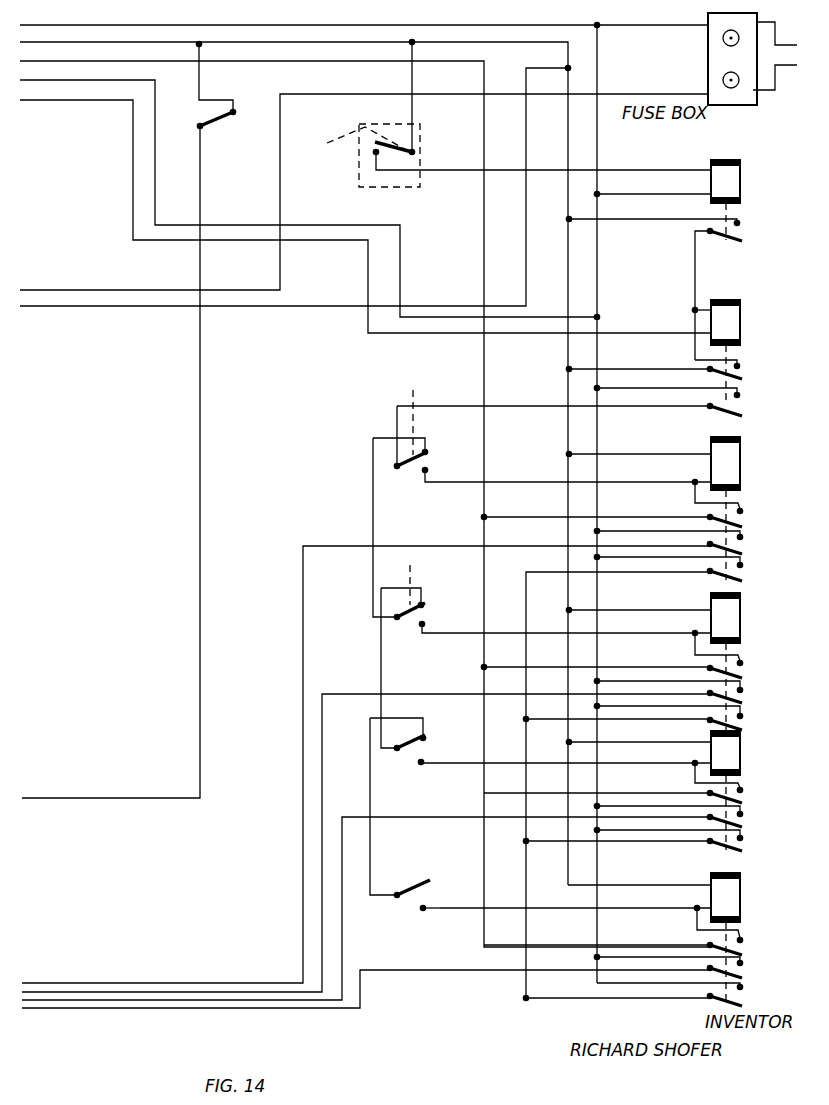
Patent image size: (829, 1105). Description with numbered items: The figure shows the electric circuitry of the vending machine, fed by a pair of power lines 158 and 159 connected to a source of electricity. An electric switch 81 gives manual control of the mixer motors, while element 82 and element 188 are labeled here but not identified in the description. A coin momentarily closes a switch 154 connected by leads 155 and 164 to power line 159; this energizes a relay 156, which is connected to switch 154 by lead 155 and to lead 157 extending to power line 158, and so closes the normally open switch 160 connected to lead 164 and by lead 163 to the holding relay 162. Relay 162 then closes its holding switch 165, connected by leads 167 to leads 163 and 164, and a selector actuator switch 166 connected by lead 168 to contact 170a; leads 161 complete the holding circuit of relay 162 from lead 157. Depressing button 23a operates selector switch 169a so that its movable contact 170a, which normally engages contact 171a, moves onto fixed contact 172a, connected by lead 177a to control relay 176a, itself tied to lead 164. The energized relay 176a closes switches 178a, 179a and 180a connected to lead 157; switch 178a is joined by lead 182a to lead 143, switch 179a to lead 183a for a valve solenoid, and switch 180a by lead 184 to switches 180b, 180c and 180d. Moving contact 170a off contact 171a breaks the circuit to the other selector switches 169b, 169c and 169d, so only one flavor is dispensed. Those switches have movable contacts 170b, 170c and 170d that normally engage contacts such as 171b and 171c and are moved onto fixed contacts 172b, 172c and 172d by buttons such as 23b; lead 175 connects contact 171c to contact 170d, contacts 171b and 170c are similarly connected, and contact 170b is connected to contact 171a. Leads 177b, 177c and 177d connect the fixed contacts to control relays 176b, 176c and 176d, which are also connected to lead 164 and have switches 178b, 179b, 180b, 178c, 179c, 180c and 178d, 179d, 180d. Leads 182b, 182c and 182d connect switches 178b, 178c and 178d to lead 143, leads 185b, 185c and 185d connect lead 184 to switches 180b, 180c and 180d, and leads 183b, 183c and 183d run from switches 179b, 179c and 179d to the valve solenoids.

The electric switch 81 is at (242, 108).
The conductor 82 is at (208, 172).
The lead 155 is at (411, 75).
The switch 154 is at (370, 150).
The lead 143 is at (482, 266).
The lead 164 is at (568, 278).
The lead 157 is at (598, 283).
The leads 161 is at (506, 334).
The power line 158 is at (672, 24).
The power line 159 is at (656, 92).
The fuse box connector 188 is at (732, 100).
The relay 156 is at (735, 190).
The normally open switch 160 is at (745, 228).
The lead 163 is at (672, 222).
The holding relay 162 is at (735, 320).
The holding switch 165 is at (745, 368).
The leads 167 is at (694, 352).
The selector actuator switch 166 is at (745, 400).
The lead 168 is at (640, 408).
The button 23a is at (405, 388).
The fixed contact element 171a is at (426, 442).
The selector switch 169a is at (430, 458).
The fixed contact 172a is at (451, 476).
The movable contact 170a is at (404, 476).
The lead 177a is at (634, 480).
The control relay 176a is at (735, 473).
The lead 182a is at (650, 508).
The switch 178a is at (745, 514).
The switch 179a is at (745, 542).
The switch 180a is at (745, 570).
The lead 183a is at (352, 548).
The lead 184 is at (540, 572).
The button 23b is at (402, 566).
The contact 171b is at (427, 602).
The movable contact 170b is at (430, 668).
The fixed contact 172b is at (450, 622).
The selector switch 169b is at (412, 628).
The lead 177b is at (668, 606).
The control relay 176b is at (735, 625).
The lead 182b is at (655, 660).
The switch 178b is at (745, 666).
The switch 179b is at (745, 692).
The switch 180b is at (745, 718).
The lead 183b is at (360, 694).
The lead 185b is at (628, 722).
The contact 171c is at (424, 723).
The movable contact 170c is at (429, 744).
The fixed contact 172c is at (449, 759).
The selector switch 169c is at (412, 752).
The lead 175 is at (372, 852).
The control relay 176c is at (728, 752).
The lead 177c is at (616, 764).
The lead 182c is at (664, 796).
The switch 178c is at (745, 790).
The switch 179c is at (745, 816).
The switch 180c is at (745, 840).
The lead 183c is at (360, 816).
The lead 185c is at (680, 858).
The movable contact 170d is at (429, 882).
The fixed contact 172d is at (452, 896).
The selector switch 169d is at (412, 900).
The control relay 176d is at (735, 897).
The lead 177d is at (624, 902).
The lead 182d is at (667, 948).
The switch 178d is at (745, 940).
The switch 179d is at (745, 966).
The switch 180d is at (745, 994).
The lead 183d is at (398, 970).
The lead 185d is at (674, 1012).